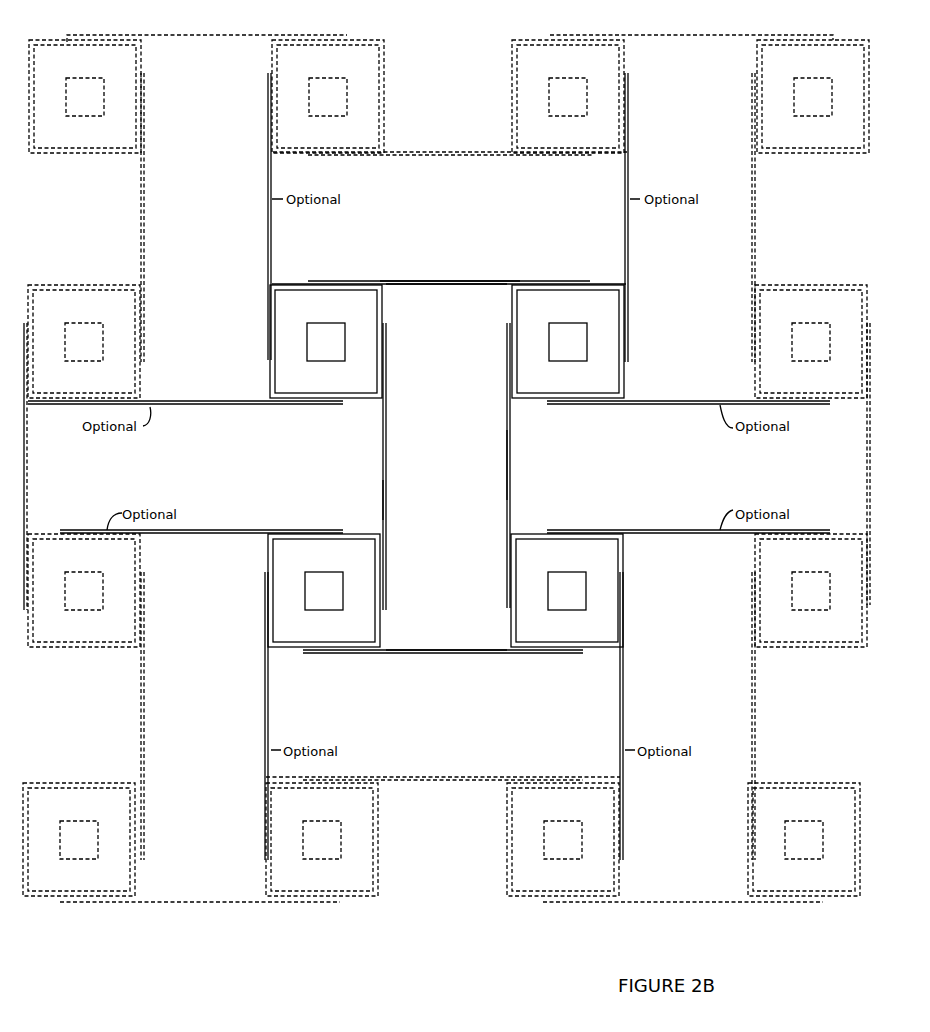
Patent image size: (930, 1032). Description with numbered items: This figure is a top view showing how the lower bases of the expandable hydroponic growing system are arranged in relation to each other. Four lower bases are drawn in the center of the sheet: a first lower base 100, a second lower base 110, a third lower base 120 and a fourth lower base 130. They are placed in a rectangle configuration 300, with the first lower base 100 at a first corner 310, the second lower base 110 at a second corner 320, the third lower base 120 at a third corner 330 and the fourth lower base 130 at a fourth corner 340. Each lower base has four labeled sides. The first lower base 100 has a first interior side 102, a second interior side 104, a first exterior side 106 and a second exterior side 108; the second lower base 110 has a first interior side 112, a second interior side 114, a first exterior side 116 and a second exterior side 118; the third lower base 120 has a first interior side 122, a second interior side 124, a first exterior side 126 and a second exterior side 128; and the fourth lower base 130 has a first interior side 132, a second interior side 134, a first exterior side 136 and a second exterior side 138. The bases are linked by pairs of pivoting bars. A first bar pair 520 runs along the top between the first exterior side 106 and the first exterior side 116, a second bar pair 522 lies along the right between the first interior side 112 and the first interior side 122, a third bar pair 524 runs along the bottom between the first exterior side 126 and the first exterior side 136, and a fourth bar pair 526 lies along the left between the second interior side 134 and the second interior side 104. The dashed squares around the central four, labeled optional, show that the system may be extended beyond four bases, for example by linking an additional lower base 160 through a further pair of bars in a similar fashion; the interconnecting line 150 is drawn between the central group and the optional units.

The first lower base 100 is at (336, 315).
The first interior side 102 is at (350, 404).
The second interior side 104 is at (386, 312).
The first exterior side 106 is at (288, 282).
The second exterior side 108 is at (268, 386).
The second lower base 110 is at (577, 315).
The first interior side 112 is at (510, 313).
The second interior side 114 is at (523, 404).
The first exterior side 116 is at (597, 282).
The second exterior side 118 is at (627, 382).
The third lower base 120 is at (575, 567).
The first interior side 122 is at (508, 627).
The second interior side 124 is at (523, 532).
The first exterior side 126 is at (595, 653).
The second exterior side 128 is at (618, 548).
The fourth lower base 130 is at (333, 567).
The first interior side 132 is at (357, 532).
The second interior side 134 is at (385, 630).
The first exterior side 136 is at (287, 655).
The second exterior side 138 is at (268, 556).
The interconnect line to optional chip 150 is at (180, 408).
The additional lower base 160 is at (47, 404).
The rectangle configuration 300 is at (397, 276).
The first corner 310 is at (266, 263).
The second corner 320 is at (629, 281).
The third corner 330 is at (627, 655).
The fourth corner 340 is at (262, 651).
The first bar pair 520 is at (463, 288).
The second bar pair 522 is at (508, 465).
The third bar pair 524 is at (440, 648).
The fourth bar pair 526 is at (388, 502).